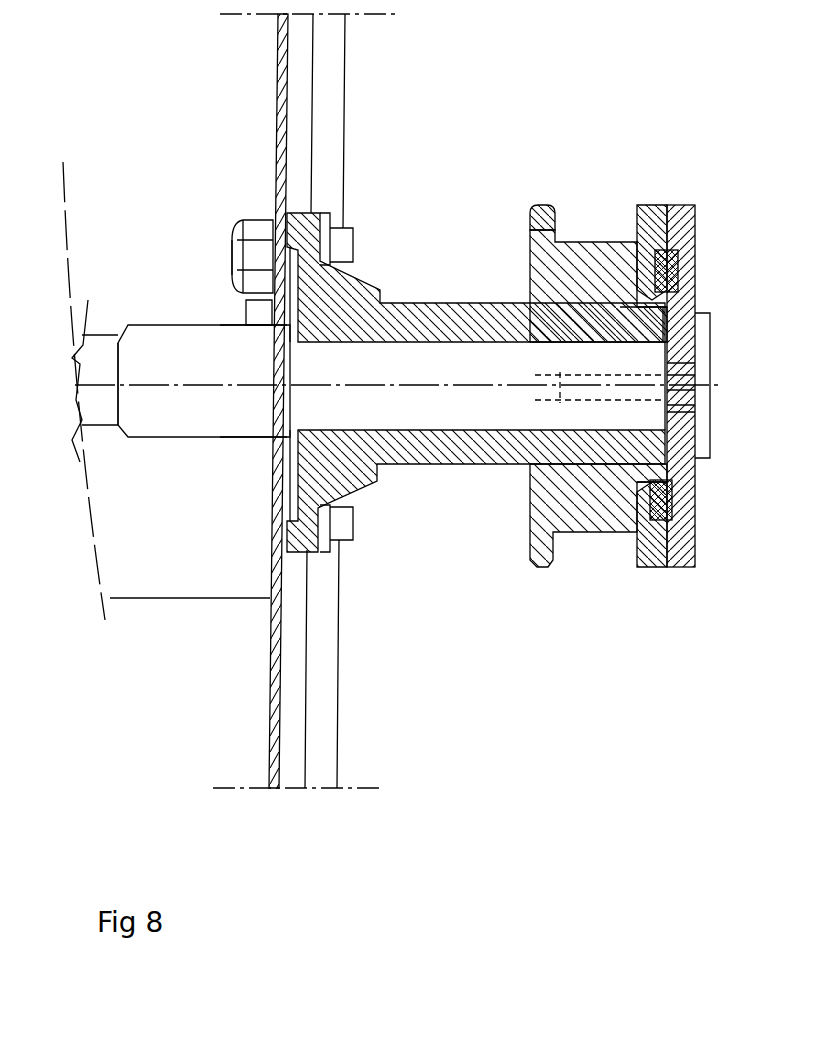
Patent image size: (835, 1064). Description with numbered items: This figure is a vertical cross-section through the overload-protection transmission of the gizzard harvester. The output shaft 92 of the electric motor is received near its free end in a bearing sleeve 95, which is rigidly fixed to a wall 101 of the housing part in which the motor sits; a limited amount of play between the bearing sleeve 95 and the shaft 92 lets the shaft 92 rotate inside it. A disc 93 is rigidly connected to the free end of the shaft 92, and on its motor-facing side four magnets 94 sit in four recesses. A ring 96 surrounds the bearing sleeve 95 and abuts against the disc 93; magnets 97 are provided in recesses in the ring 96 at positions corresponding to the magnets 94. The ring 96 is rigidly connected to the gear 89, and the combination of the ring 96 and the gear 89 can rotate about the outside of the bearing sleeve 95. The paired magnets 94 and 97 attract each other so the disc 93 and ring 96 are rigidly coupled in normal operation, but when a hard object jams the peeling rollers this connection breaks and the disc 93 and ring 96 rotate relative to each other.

The wall 101 is at (279, 94).
The output shaft 92 is at (200, 438).
The bearing sleeve 95 is at (423, 303).
The gear 89 is at (530, 262).
The ring 96 is at (636, 218).
The disc 93 is at (708, 218).
The magnets 94 is at (693, 503).
The magnets 97 is at (640, 505).